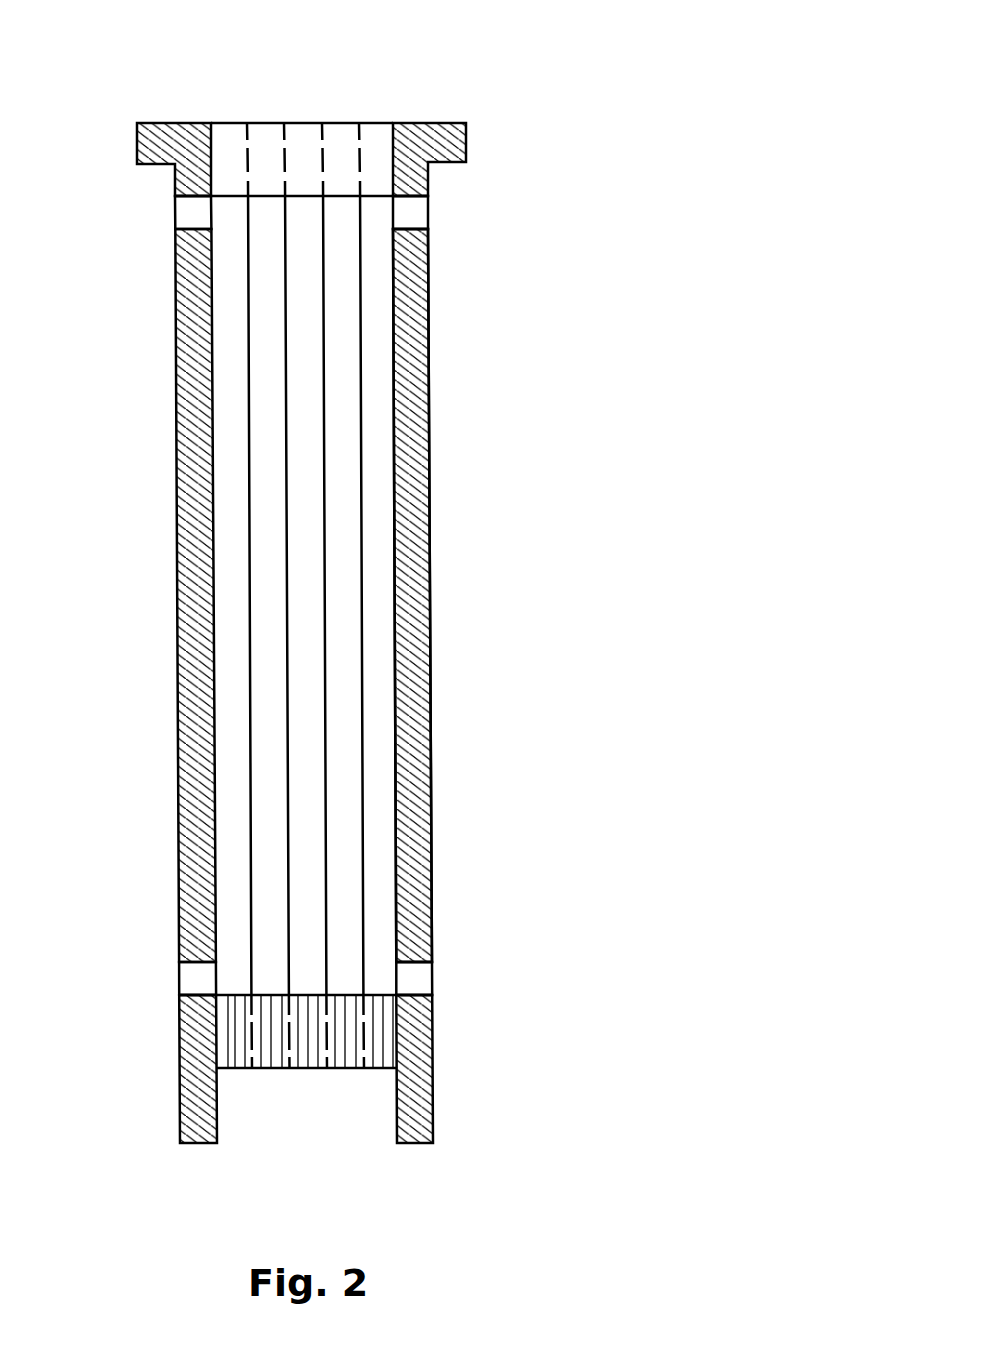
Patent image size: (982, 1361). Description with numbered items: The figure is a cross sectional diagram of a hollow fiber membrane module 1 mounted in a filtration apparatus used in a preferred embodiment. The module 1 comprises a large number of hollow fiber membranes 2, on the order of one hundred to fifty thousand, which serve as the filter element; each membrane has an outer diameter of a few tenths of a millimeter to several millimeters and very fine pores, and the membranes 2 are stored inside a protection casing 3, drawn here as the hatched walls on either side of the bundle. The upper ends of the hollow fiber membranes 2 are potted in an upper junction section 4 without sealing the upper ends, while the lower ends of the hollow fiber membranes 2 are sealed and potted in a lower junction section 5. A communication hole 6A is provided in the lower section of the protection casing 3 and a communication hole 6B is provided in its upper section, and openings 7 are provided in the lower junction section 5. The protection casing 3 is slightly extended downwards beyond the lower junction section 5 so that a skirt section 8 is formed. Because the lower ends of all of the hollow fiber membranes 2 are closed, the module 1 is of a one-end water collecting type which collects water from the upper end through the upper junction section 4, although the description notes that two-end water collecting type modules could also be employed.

The hollow fiber membrane module 1 is at (430, 602).
The hollow fiber membranes 2 is at (360, 453).
The protection casing 3 is at (433, 792).
The upper junction section 4 is at (378, 130).
The lower junction section 5 is at (392, 1035).
The communication hole 6A is at (433, 972).
The communication hole 6B is at (427, 212).
The openings 7 is at (307, 1070).
The skirt section 8 is at (178, 1108).